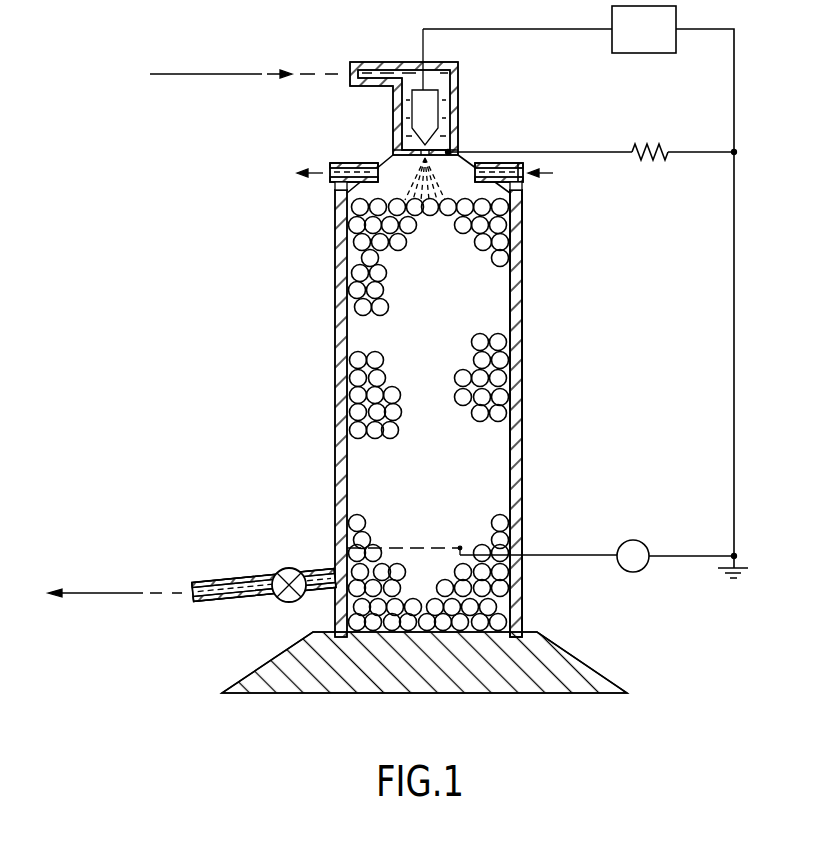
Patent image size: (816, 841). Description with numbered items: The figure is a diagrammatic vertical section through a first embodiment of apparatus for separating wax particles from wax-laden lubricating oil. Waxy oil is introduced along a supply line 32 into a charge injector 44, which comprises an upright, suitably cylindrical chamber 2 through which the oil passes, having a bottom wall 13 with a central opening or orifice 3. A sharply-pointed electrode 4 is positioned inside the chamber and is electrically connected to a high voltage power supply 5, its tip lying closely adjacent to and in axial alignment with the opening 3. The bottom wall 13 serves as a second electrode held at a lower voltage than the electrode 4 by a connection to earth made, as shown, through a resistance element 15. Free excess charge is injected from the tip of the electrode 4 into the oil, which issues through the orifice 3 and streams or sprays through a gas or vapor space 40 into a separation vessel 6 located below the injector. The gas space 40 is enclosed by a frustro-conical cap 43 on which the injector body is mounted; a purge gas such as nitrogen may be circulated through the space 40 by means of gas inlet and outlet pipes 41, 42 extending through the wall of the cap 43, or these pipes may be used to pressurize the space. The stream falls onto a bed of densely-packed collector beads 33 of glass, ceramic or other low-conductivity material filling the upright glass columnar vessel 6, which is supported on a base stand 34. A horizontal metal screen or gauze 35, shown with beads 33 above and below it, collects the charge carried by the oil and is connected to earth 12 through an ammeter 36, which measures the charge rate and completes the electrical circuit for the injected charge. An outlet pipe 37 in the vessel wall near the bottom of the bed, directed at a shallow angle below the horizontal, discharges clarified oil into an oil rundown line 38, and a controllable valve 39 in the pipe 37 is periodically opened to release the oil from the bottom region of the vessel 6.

The chamber 2 is at (460, 128).
The opening or orifice 3 is at (422, 160).
The pointed electrode 4 is at (417, 118).
The high voltage power supply 5 is at (636, 42).
The separation vessel 6 is at (515, 363).
The earth 12 is at (740, 560).
The bottom wall 13 is at (450, 152).
The resistance element 15 is at (650, 154).
The supply line 32 is at (202, 74).
The collector beads 33 is at (520, 224).
The base stand 34 is at (550, 668).
The metal screen or gauze 35 is at (417, 547).
The ammeter 36 is at (645, 543).
The outlet pipe 37 is at (217, 580).
The oil rundown line 38 is at (112, 593).
The controllable valve 39 is at (280, 600).
The gas or vapor space 40 is at (470, 188).
The gas inlet pipe 41 is at (335, 162).
The gas outlet pipe 42 is at (522, 158).
The frustro-conical cap 43 is at (337, 190).
The charge injector 44 is at (478, 110).